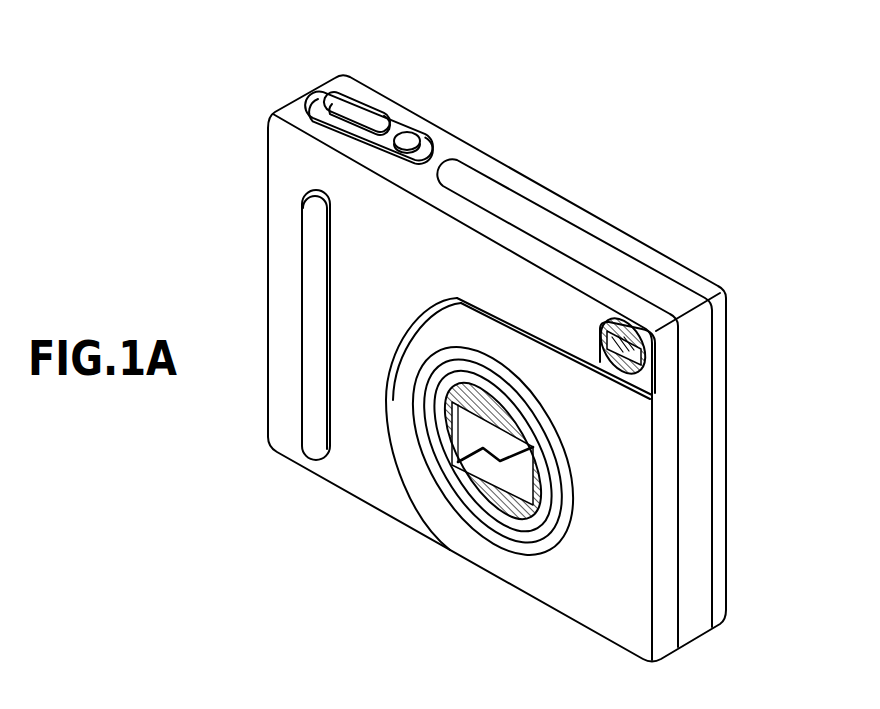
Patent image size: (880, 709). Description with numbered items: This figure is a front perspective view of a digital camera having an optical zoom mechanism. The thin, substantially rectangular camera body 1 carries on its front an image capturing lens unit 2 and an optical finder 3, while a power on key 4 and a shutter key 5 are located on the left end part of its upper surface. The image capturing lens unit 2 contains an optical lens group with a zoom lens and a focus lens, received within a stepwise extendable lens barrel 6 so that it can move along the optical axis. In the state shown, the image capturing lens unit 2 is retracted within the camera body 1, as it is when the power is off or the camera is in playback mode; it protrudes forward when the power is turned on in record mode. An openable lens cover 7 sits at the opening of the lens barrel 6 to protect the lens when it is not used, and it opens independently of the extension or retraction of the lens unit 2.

The camera body 1 is at (722, 486).
The image capturing lens unit 2 is at (582, 498).
The optical finder 3 is at (598, 334).
The power on key 4 is at (402, 137).
The shutter key 5 is at (352, 108).
The lens barrel 6 is at (487, 535).
The lens cover 7 is at (520, 477).